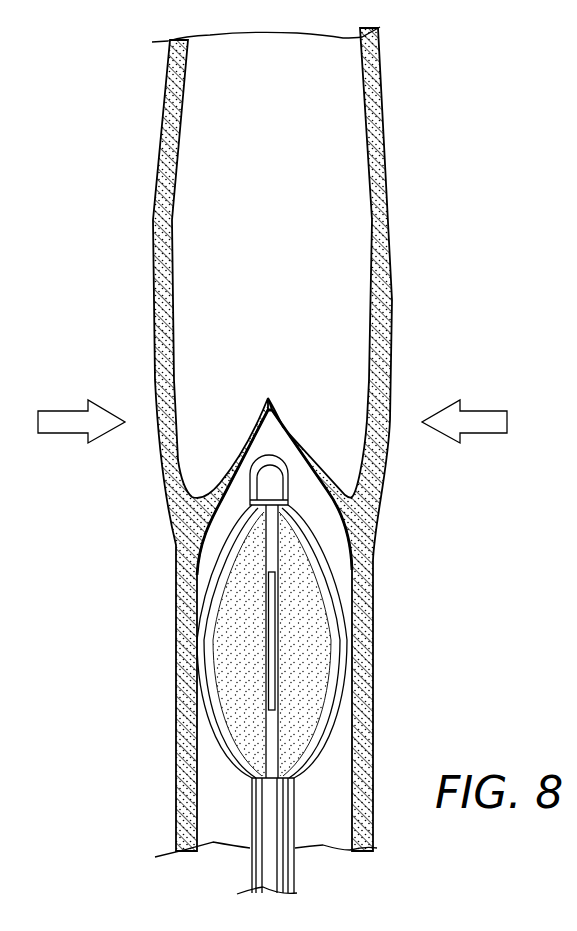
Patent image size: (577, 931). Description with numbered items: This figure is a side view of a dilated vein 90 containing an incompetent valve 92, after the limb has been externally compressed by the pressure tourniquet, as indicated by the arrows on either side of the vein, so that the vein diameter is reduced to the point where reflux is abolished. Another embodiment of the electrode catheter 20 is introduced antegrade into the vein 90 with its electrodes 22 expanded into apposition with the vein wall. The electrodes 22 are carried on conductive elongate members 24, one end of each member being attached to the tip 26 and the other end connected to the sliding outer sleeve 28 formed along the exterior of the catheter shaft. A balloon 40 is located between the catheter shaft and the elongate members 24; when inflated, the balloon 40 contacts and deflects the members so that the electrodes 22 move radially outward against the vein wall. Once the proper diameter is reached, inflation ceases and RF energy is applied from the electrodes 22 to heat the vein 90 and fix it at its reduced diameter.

The catheter 20 is at (239, 841).
The electrodes 22 is at (268, 620).
The elongate members 24 is at (337, 731).
The tip 26 is at (268, 483).
The sliding outer sleeve 28 is at (297, 873).
The balloon 40 is at (320, 613).
The vein 90 is at (388, 185).
The incompetent valve 92 is at (290, 437).